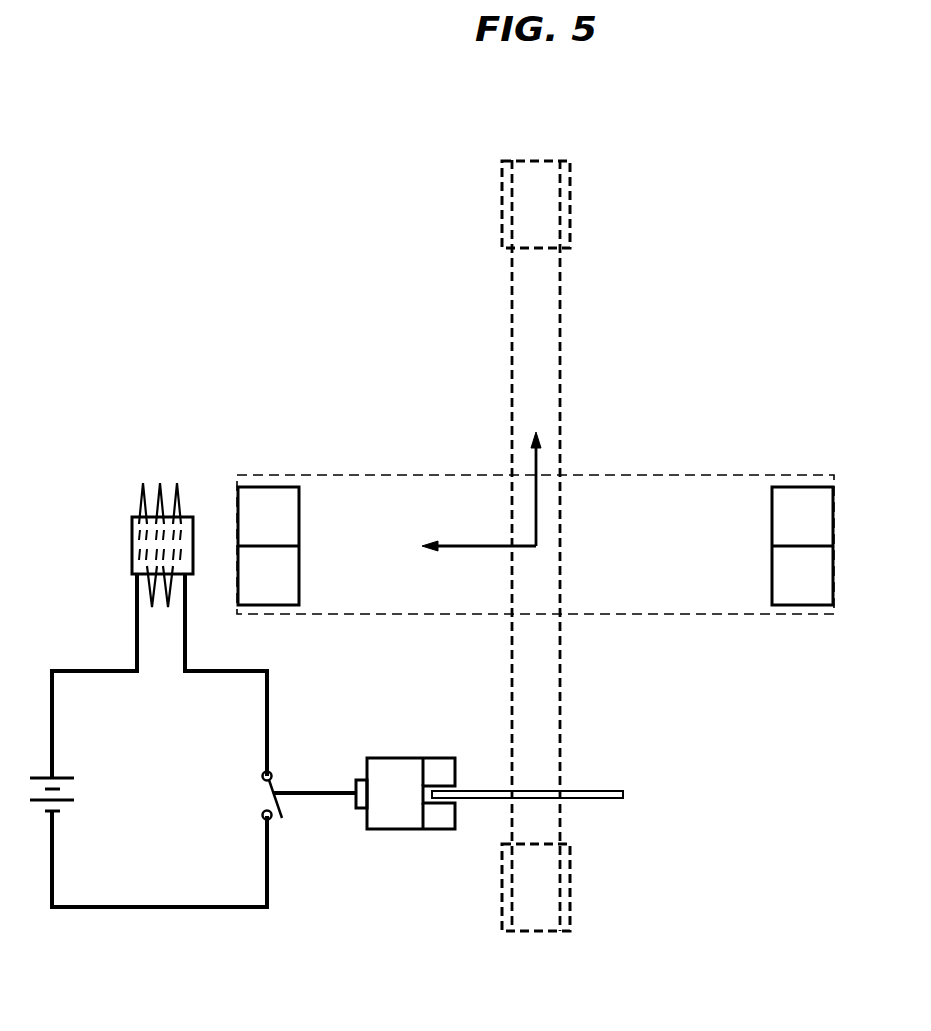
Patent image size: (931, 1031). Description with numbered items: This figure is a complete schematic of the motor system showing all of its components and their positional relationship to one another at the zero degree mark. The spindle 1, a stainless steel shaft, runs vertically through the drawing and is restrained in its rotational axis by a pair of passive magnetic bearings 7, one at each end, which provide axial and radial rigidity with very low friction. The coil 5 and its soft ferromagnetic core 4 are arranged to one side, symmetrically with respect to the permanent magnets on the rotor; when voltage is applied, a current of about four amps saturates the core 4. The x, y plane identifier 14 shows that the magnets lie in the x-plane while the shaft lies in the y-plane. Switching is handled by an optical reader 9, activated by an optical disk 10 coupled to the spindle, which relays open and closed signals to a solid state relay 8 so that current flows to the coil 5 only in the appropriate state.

The spindle 1 is at (561, 381).
The passive magnetic bearings 7 is at (572, 191).
The soft ferromagnetic core 4 is at (130, 552).
The coil 5 is at (141, 497).
The solid state relay 8 is at (272, 790).
The optical reader 9 is at (395, 831).
The optical disk 10 is at (605, 790).
The x, y plane identifier 14 is at (536, 550).